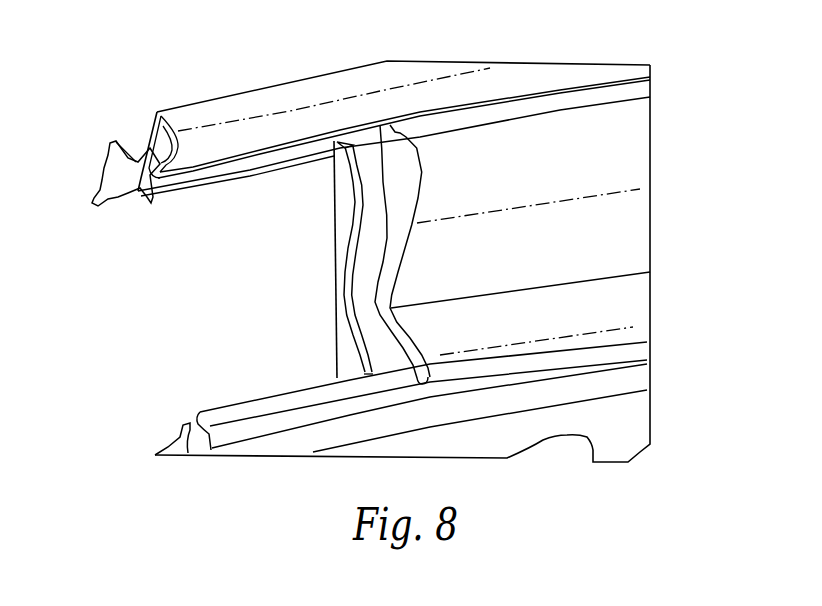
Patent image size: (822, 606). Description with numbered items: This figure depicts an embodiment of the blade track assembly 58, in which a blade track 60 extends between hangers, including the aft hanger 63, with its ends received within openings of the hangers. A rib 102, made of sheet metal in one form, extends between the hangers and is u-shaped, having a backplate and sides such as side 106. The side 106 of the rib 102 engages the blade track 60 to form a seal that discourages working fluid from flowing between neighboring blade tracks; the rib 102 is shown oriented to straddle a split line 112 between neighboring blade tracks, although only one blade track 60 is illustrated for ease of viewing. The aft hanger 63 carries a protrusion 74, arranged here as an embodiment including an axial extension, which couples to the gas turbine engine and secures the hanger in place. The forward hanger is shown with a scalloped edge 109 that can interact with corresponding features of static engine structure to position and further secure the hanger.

The blade track assembly 58 is at (693, 83).
The blade track 60 is at (623, 166).
The aft hanger 63 is at (130, 153).
The protrusion 74 is at (104, 164).
The rib 102 is at (284, 231).
The side 106 is at (333, 266).
The scalloped edge 109 is at (538, 473).
The split line 112 is at (389, 122).